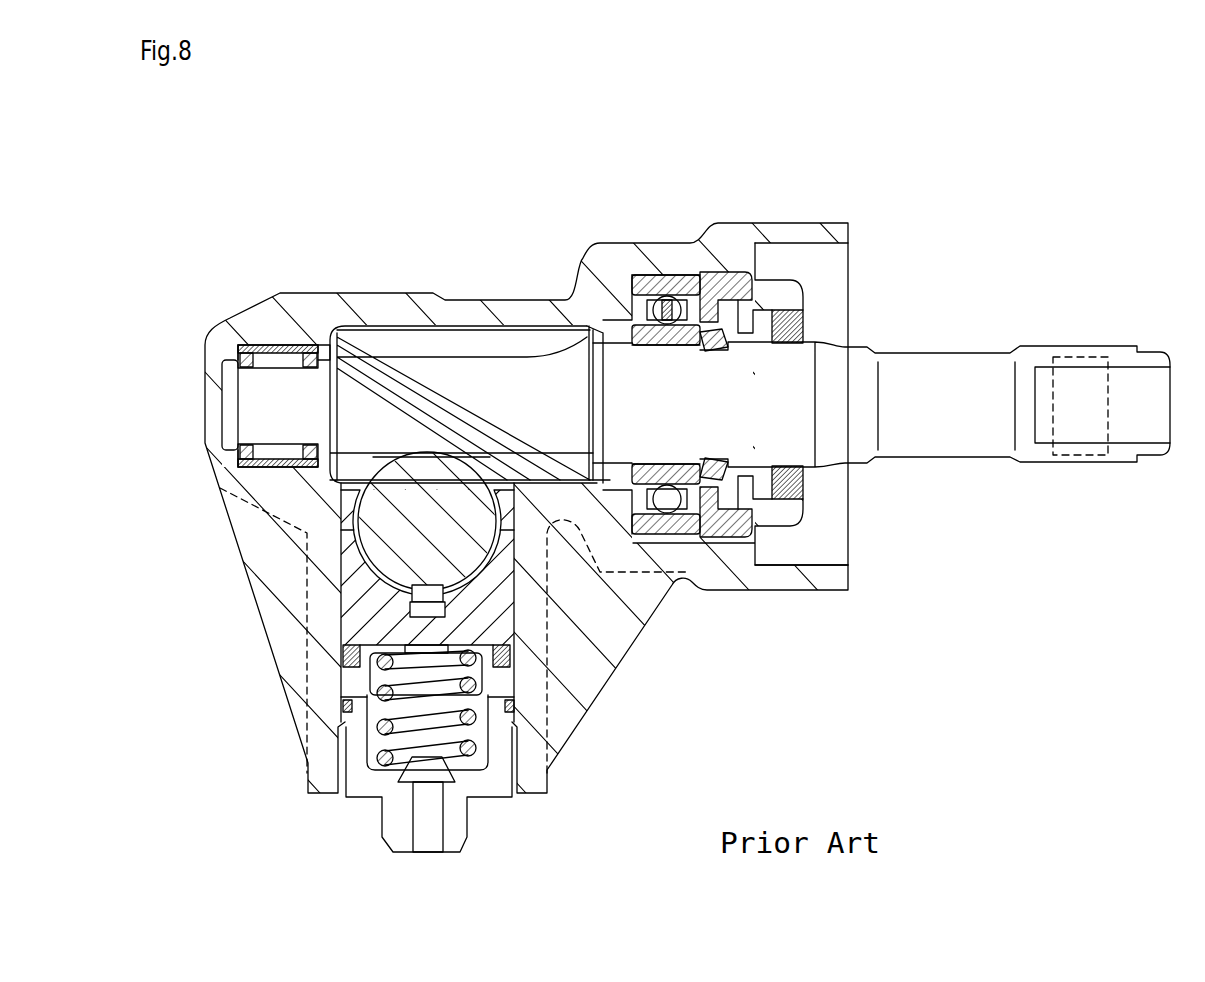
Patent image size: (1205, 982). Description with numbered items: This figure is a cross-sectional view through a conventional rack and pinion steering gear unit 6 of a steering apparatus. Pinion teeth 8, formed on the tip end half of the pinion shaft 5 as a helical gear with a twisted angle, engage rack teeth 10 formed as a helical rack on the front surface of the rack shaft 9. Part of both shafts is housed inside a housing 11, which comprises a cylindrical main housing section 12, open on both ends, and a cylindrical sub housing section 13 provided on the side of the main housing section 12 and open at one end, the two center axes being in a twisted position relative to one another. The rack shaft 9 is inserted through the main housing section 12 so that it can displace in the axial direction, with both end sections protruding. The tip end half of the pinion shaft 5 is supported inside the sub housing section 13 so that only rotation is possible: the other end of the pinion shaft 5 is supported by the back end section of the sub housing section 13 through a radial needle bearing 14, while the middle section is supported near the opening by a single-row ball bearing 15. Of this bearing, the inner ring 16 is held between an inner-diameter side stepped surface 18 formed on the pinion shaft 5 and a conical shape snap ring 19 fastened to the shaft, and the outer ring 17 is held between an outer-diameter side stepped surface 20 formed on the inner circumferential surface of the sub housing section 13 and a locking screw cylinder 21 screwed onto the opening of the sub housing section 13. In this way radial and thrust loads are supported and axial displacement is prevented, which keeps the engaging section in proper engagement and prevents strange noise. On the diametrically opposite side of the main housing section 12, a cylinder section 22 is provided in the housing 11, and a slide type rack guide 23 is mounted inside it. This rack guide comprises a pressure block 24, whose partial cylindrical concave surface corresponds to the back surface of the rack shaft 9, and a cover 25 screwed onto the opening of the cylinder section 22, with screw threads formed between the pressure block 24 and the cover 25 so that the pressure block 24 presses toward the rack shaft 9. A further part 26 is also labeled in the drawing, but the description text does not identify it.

The pinion shaft 5 is at (955, 380).
The rack and pinion steering gear unit 6 is at (478, 286).
The pinion teeth 8 is at (403, 470).
The rack shaft 9 is at (482, 522).
The rack teeth 10 is at (272, 358).
The housing 11 is at (586, 232).
The main housing section 12 is at (307, 502).
The sub housing section 13 is at (345, 318).
The radial needle bearing 14 is at (267, 348).
The ball bearing 15 is at (680, 273).
The inner ring 16 is at (670, 465).
The outer ring 17 is at (717, 320).
The inner-diameter side stepped surface 18 is at (648, 358).
The conical shape snap ring 19 is at (786, 306).
The outer-diameter side stepped surface 20 is at (665, 262).
The locking screw cylinder 21 is at (800, 263).
The cylinder section 22 is at (533, 603).
The slide type rack guide 23 is at (531, 686).
The pressure block 24 is at (480, 630).
The cover 25 is at (485, 767).
The O-ring 26 is at (377, 730).